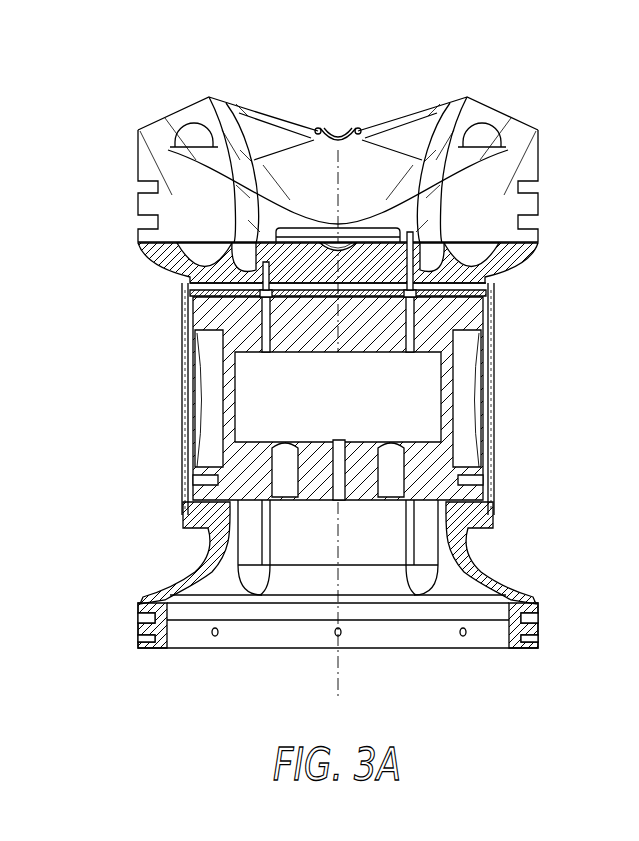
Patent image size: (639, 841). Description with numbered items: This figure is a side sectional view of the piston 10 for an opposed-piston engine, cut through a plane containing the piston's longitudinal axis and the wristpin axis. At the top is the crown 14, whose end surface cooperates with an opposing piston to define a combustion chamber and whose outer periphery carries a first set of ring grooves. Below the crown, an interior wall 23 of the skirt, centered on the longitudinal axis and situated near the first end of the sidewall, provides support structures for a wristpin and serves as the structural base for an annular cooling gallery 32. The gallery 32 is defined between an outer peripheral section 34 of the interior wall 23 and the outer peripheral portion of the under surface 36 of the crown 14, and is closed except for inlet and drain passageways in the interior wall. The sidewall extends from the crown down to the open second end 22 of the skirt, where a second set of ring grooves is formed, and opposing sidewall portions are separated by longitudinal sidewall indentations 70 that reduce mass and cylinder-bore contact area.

The piston 10 is at (328, 380).
The crown 14 is at (258, 128).
The under surface of the crown 36 is at (235, 170).
The annular cooling gallery 32 is at (207, 198).
The outer peripheral section 34 is at (170, 277).
The interior wall 23 is at (265, 272).
The sidewall indentations 70 is at (160, 520).
The second end 22 is at (312, 655).